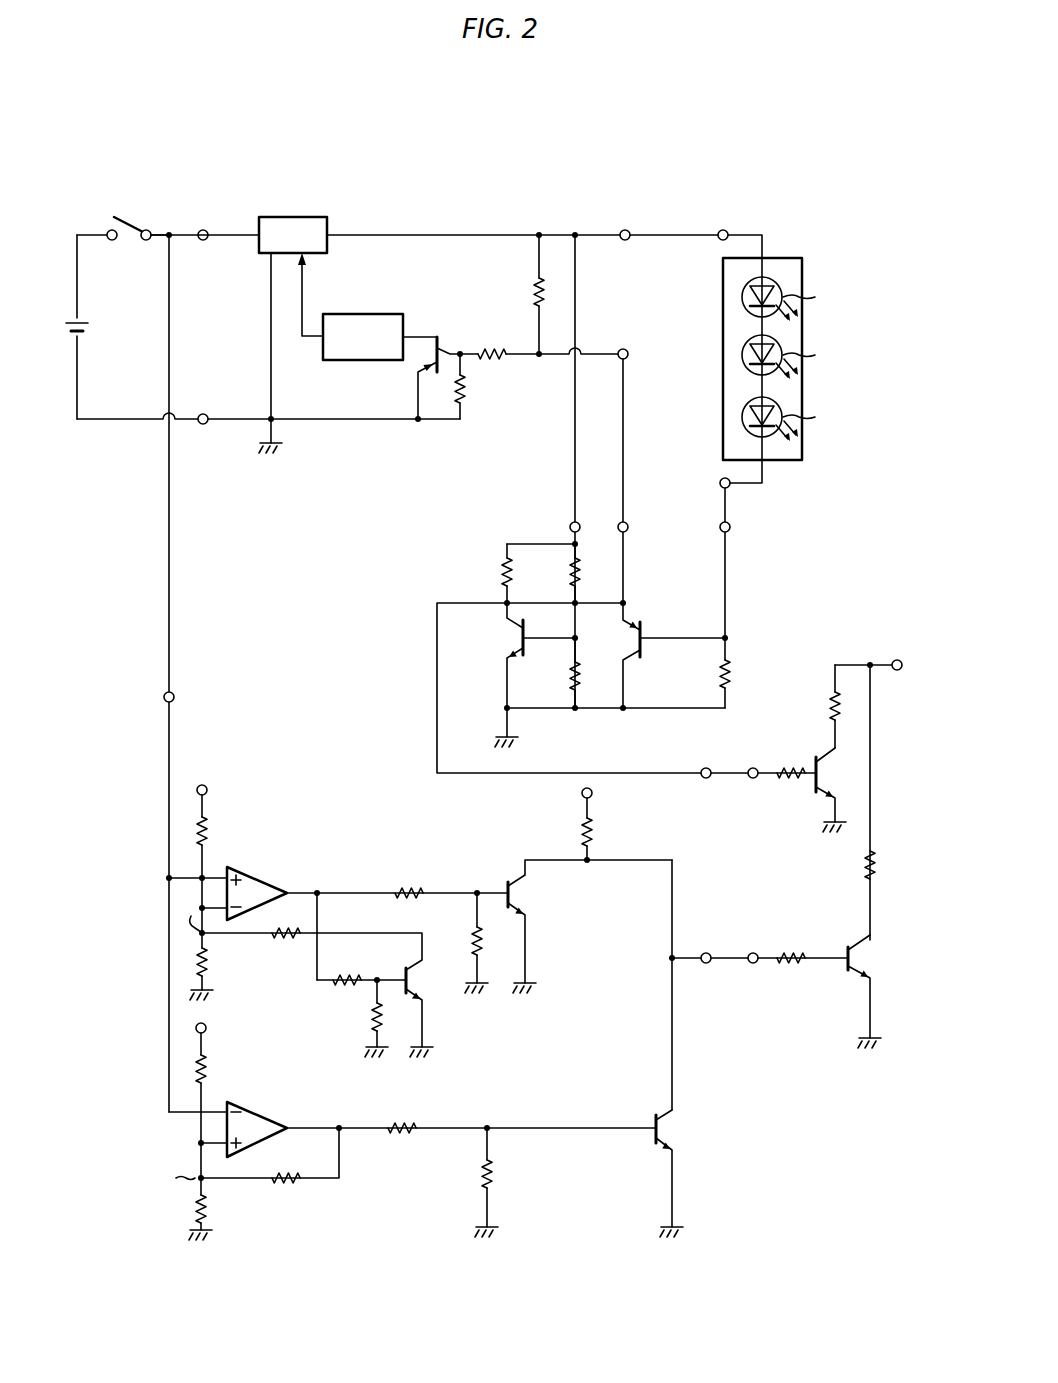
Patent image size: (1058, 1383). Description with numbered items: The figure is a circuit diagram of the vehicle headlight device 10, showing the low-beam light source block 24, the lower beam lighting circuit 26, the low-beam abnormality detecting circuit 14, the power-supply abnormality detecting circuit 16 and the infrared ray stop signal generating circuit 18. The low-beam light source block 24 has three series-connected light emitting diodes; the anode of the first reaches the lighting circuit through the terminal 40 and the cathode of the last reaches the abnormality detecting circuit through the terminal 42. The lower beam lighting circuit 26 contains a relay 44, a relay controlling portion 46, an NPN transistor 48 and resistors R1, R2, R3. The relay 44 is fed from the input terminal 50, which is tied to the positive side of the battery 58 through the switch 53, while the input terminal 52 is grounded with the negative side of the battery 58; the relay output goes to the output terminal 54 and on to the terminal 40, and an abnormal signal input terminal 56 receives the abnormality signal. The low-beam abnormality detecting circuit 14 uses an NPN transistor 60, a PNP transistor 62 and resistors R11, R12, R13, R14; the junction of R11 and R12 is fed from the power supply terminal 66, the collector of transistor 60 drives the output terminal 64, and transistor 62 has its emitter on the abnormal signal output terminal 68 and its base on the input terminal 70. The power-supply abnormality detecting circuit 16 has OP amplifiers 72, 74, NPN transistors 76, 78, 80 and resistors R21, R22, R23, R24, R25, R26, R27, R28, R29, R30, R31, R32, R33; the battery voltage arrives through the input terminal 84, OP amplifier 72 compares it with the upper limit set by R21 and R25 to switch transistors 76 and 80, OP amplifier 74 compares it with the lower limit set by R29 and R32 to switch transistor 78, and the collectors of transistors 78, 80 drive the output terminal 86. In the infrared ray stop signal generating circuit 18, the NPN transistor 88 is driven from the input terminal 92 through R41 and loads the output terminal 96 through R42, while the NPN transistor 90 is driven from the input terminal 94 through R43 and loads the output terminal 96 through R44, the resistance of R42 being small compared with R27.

The vehicle headlight device 10 is at (232, 154).
The low-beam abnormality detecting circuit 14 is at (531, 657).
The power-supply abnormality detecting circuit 16 is at (398, 997).
The infrared ray stop signal generating circuit 18 is at (795, 814).
The low-beam light source block 24 is at (787, 258).
The lower beam lighting circuit 26 is at (448, 216).
The terminal 40 is at (721, 230).
The terminal 42 is at (720, 484).
The relay 44 is at (288, 217).
The relay controlling portion 46 is at (361, 314).
The NPN transistor 48 is at (436, 336).
The input terminal 50 is at (203, 228).
The input terminal 52 is at (203, 425).
The switch 53 is at (129, 222).
The output terminal 54 is at (626, 230).
The abnormal signal input terminal 56 is at (623, 349).
The battery 58 is at (90, 327).
The NPN transistor 60 is at (521, 640).
The PNP transistor 62 is at (642, 635).
The output terminal 64 is at (706, 779).
The power supply terminal 66 is at (570, 523).
The abnormal signal output terminal 68 is at (629, 527).
The input terminal 70 is at (731, 527).
The OP amplifier 72 is at (270, 884).
The OP amplifier 74 is at (280, 1120).
The NPN transistor 76 is at (423, 993).
The NPN transistor 78 is at (676, 1132).
The NPN transistor 80 is at (525, 898).
The input terminal 84 is at (175, 697).
The output terminal 86 is at (706, 964).
The NPN transistor 88 is at (813, 792).
The NPN transistor 90 is at (872, 960).
The input terminal 92 is at (749, 771).
The input terminal 94 is at (753, 964).
The output terminal 96 is at (897, 660).
The resistor R1 is at (519, 294).
The resistor R2 is at (499, 338).
The resistor R3 is at (480, 386).
The resistor R11 is at (479, 573).
The resistor R12 is at (547, 573).
The resistor R13 is at (547, 673).
The resistor R14 is at (697, 673).
The resistor R21 is at (230, 864).
The resistor R22 is at (407, 877).
The resistor R23 is at (468, 945).
The resistor R24 is at (615, 829).
The resistor R25 is at (226, 966).
The resistor R26 is at (289, 919).
The resistor R27 is at (361, 963).
The resistor R28 is at (353, 1018).
The resistor R29 is at (229, 1105).
The resistor R30 is at (404, 1112).
The resistor R31 is at (511, 1182).
The resistor R32 is at (226, 1209).
The resistor R33 is at (270, 1155).
The resistor R41 is at (792, 759).
The resistor R42 is at (807, 706).
The resistor R43 is at (790, 942).
The resistor R44 is at (842, 866).